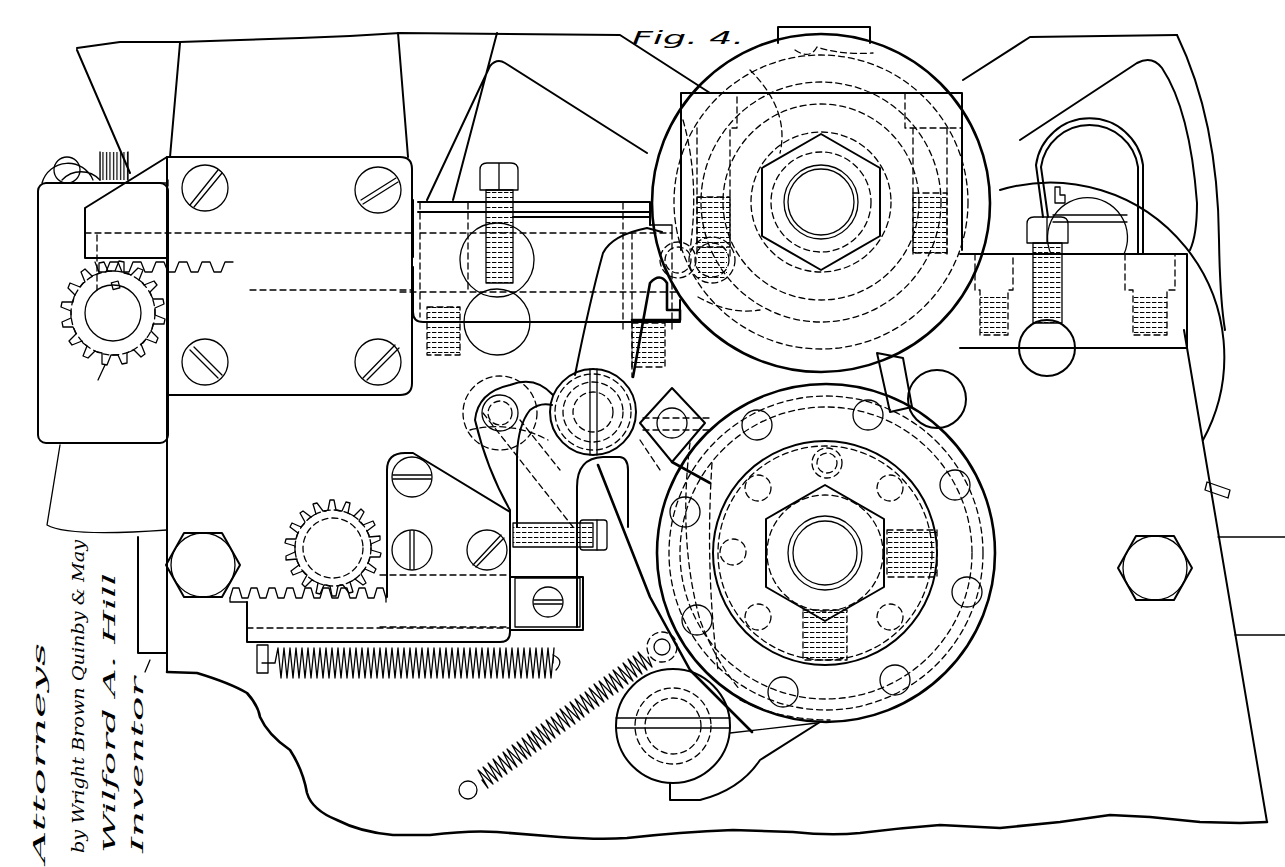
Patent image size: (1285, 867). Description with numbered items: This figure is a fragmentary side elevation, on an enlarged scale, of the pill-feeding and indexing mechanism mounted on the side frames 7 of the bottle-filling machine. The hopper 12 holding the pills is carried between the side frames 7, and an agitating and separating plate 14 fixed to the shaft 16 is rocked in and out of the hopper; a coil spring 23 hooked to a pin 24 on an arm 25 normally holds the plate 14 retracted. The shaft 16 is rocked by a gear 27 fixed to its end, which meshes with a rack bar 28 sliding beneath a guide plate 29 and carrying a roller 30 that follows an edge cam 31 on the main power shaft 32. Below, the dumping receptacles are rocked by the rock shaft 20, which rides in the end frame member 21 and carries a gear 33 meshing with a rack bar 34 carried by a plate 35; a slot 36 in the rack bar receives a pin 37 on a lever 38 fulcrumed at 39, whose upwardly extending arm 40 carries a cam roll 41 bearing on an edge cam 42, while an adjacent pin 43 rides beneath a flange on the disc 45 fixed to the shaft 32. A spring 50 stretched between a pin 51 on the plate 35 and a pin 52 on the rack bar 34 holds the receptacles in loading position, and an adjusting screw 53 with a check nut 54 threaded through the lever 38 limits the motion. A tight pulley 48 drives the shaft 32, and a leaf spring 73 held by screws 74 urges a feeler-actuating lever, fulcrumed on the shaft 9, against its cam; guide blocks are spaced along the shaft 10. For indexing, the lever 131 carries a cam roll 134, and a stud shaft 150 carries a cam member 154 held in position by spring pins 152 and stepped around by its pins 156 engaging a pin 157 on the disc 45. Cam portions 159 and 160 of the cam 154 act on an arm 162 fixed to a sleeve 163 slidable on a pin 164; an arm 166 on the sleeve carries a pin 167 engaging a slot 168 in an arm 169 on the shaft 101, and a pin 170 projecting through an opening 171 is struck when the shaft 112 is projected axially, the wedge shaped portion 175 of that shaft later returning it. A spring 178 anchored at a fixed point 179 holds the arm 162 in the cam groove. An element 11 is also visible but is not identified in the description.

The side frame 7 is at (1228, 445).
The shaft 9 is at (1060, 364).
The shaft 10 is at (966, 412).
The bracket block 11 is at (1180, 295).
The hopper 12 is at (85, 64).
The agitating and separating plate 14 is at (144, 498).
The shaft 16 is at (113, 313).
The rock shaft 20 is at (290, 530).
The end frame member 21 is at (152, 662).
The coil spring 23 is at (105, 150).
The pin 24 is at (63, 157).
The arm 25 is at (48, 160).
The gear 27 is at (99, 382).
The rack bar 28 is at (92, 265).
The guide plate 29 is at (248, 276).
The roller 30 is at (663, 328).
The edge cam 31 is at (868, 38).
The main power shaft 32 is at (821, 202).
The gear 33 is at (312, 524).
The rack bar 34 is at (228, 604).
The plate 35 is at (445, 540).
The slot 36 is at (583, 565).
The pin 37 is at (565, 612).
The lever 38 is at (535, 490).
The fulcrum 39 is at (572, 378).
The upwardly extending arm 40 is at (608, 254).
The cam roll 41 is at (710, 298).
The edge cam 42 is at (725, 70).
The pin 43 is at (735, 266).
The disc 45 is at (912, 90).
The tight pulley 48 is at (1190, 60).
The spring 50 is at (395, 680).
The pin 51 is at (255, 656).
The pin 52 is at (560, 636).
The adjusting screw 53 is at (596, 520).
The check nut 54 is at (553, 514).
The leaf spring 73 is at (1128, 126).
The screws 74 is at (1068, 199).
The shaft 101 is at (520, 458).
The shaft 112 is at (680, 415).
The lever 131 is at (1215, 380).
The cam roll 134 is at (1080, 178).
The stud shaft 150 is at (825, 553).
The spring pin 152 is at (835, 472).
The cam member 154 is at (960, 636).
The pins 156 is at (962, 487).
The pin 157 is at (903, 357).
The cam portion 159 is at (840, 727).
The cam portion 160 is at (755, 725).
The arm 162 is at (803, 723).
The sleeve 163 is at (643, 770).
The pin 164 is at (633, 700).
The upwardly extending arm 166 is at (558, 672).
The pin 167 is at (475, 432).
The slot 168 is at (518, 405).
The arm 169 is at (508, 400).
The pin 170 is at (665, 640).
The opening 171 is at (729, 566).
The wedge shaped portion 175 is at (644, 455).
The spring 178 is at (545, 770).
The fixed point 179 is at (458, 790).